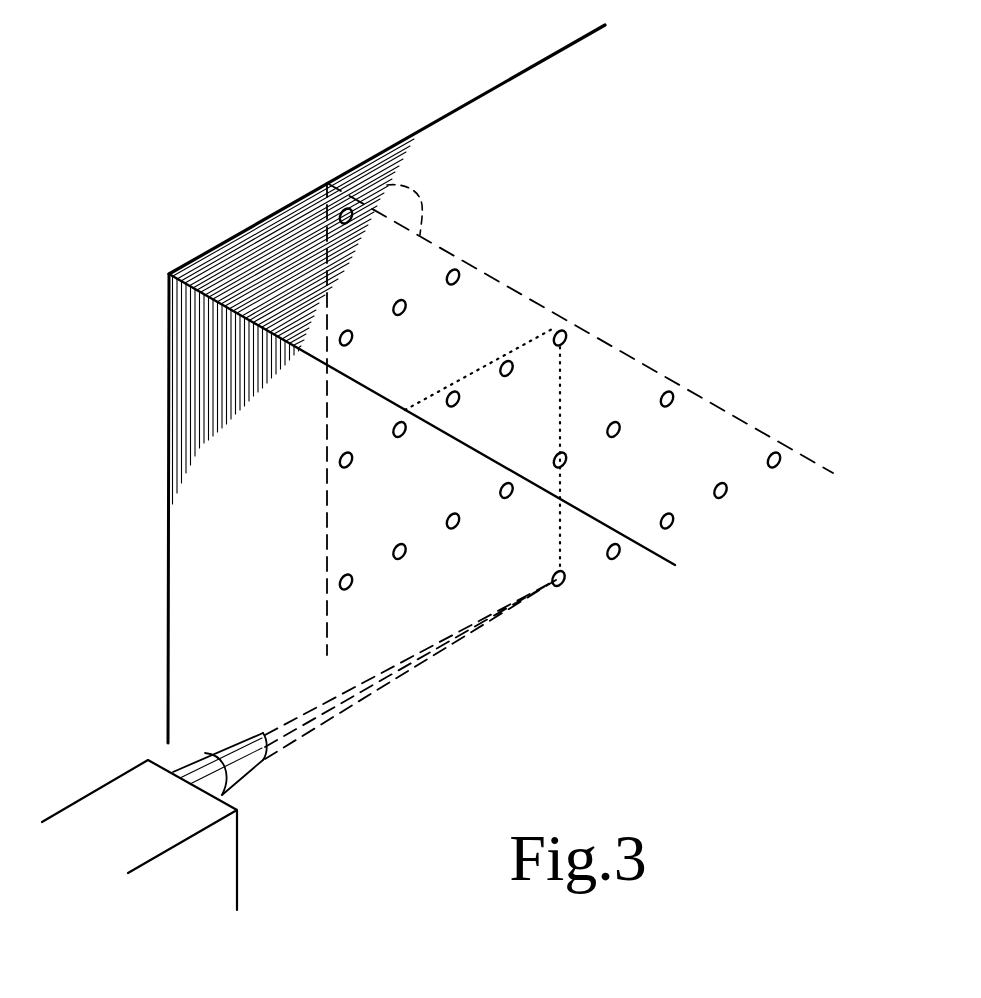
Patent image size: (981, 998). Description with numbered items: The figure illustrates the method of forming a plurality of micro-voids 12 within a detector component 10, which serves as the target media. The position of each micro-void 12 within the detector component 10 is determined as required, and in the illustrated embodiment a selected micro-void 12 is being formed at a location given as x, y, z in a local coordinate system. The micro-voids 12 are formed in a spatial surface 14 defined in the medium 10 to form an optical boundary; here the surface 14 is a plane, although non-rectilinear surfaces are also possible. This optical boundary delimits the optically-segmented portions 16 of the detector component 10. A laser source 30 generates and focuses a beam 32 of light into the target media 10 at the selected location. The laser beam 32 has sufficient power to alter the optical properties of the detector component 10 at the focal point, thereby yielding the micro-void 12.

The detector component 10 is at (476, 93).
The micro-voids 12 is at (566, 333).
The spatial surface 14 is at (387, 185).
The optically-segmented portions 16 is at (250, 247).
The laser source 30 is at (128, 788).
The laser beam 32 is at (358, 696).